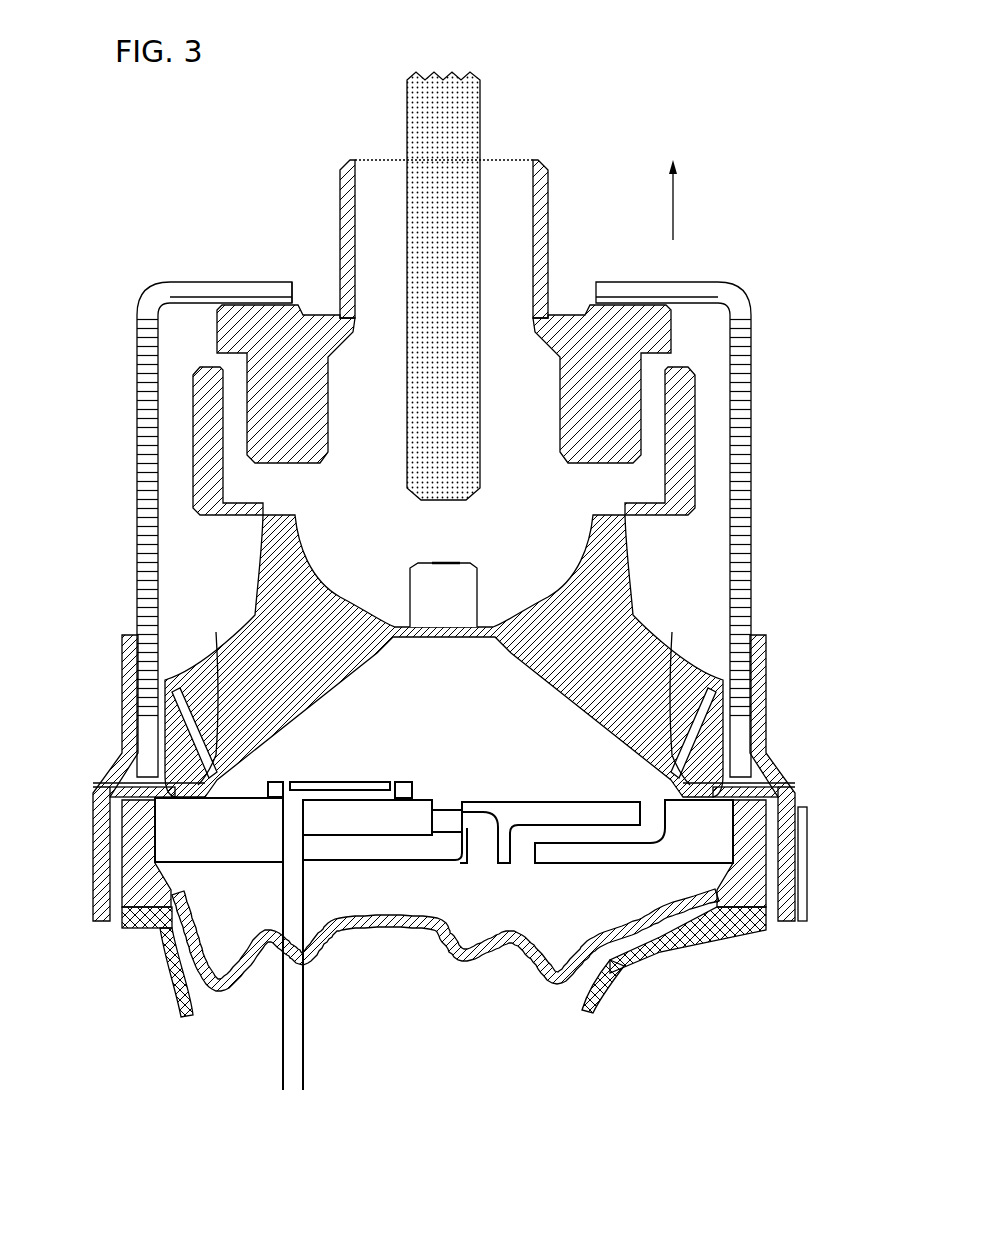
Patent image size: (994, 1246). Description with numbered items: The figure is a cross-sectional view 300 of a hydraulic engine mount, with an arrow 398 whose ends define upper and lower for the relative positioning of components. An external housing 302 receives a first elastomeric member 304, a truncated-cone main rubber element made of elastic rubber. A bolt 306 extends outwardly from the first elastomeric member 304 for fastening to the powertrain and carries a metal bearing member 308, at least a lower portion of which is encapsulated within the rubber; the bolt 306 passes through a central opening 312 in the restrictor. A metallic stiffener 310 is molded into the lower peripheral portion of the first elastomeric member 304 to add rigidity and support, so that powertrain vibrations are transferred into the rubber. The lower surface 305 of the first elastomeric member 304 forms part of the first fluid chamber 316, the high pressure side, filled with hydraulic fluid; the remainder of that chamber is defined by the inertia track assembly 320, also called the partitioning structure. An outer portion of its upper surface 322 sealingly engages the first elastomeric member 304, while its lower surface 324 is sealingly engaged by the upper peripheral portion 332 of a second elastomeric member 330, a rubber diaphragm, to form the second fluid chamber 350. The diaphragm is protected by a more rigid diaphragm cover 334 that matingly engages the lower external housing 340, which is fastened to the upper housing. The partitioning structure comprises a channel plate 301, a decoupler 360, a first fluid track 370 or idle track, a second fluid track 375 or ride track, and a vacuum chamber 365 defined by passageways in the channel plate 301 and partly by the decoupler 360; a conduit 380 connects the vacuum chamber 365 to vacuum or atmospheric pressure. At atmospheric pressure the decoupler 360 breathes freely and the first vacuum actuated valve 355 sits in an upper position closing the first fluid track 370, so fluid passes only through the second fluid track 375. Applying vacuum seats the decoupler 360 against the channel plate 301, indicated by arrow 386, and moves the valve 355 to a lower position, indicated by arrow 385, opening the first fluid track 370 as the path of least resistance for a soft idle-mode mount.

The cross-sectional view of hydraulic mount 300 is at (616, 74).
The channel plate 301 is at (206, 829).
The external housing 302 is at (142, 300).
The first elastomeric member 304 is at (598, 348).
The lower surface of the first elastomeric member 305 is at (326, 678).
The bolt 306 is at (435, 190).
The metal bearing member 308 is at (497, 190).
The metallic stiffener 310 is at (670, 740).
The central opening 312 is at (318, 282).
The first fluid chamber 316 is at (458, 683).
The inertia track assembly 320 is at (593, 878).
The outer portion of upper surface of the partitioning structure 322 is at (235, 797).
The lower surface of the partitioning structure 324 is at (225, 866).
The second elastomeric member 330 is at (527, 960).
The upper peripheral portion 332 is at (145, 908).
The diaphragm cover 334 is at (193, 1003).
The lower external housing 340 is at (128, 648).
The second fluid chamber 350 is at (450, 903).
The first vacuum actuated valve 355 is at (453, 820).
The decoupler 360 is at (331, 781).
The vacuum chamber 365 is at (297, 850).
The first fluid track 370 is at (477, 845).
The second fluid track 375 is at (523, 858).
The conduit 380 is at (287, 1069).
The arrow indicating valve lower position 385 is at (447, 846).
The arrow indicating decoupler seating 386 is at (293, 802).
The arrow 398 is at (677, 238).